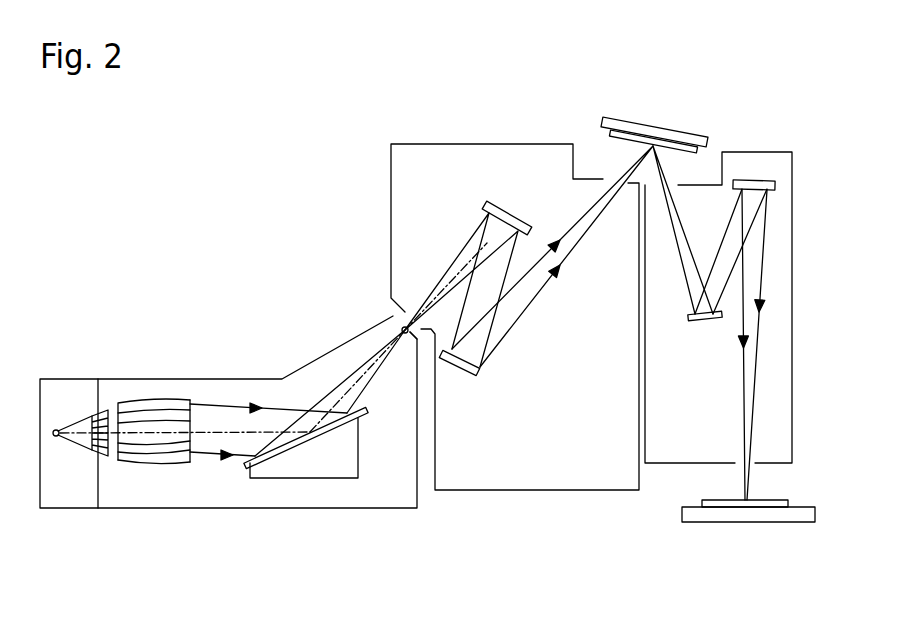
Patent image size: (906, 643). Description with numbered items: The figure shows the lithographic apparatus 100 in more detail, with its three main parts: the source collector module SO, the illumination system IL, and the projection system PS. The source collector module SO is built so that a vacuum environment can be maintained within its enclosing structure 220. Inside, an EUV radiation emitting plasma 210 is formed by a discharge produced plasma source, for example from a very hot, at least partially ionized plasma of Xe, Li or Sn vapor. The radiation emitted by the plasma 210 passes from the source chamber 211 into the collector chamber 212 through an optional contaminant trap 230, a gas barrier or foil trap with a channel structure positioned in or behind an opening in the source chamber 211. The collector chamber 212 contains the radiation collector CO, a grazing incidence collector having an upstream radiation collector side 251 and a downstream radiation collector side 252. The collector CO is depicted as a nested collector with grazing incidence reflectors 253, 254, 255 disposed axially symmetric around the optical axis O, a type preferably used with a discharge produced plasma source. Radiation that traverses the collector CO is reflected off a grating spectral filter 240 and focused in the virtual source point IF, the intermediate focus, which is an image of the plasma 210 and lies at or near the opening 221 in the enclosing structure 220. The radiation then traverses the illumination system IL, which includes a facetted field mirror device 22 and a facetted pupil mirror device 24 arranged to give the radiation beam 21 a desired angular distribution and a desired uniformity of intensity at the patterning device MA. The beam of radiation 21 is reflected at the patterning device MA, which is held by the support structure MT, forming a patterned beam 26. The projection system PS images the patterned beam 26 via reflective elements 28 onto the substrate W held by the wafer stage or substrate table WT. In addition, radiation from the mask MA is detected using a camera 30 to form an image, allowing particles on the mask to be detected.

The apparatus 100 is at (163, 156).
The source collector module SO is at (214, 248).
The EUV radiation emitting plasma 210 is at (56, 438).
The source chamber 211 is at (77, 396).
The collector chamber 212 is at (293, 497).
The enclosing structure 220 is at (313, 356).
The opening 221 is at (398, 323).
The contaminant trap 230 is at (110, 447).
The radiation collector CO is at (165, 405).
The upstream radiation collector side 251 is at (110, 447).
The downstream radiation collector side 252 is at (192, 403).
The grazing incidence reflector 253 is at (172, 463).
The grazing incidence reflector 254 is at (153, 452).
The grazing incidence reflector 255 is at (143, 443).
The grating spectral filter 240 is at (305, 437).
The virtual source point IF is at (405, 337).
The illumination system IL is at (409, 118).
The optical axis O is at (448, 280).
The facetted field mirror device 22 is at (508, 217).
The facetted pupil mirror device 24 is at (465, 367).
The radiation beam 21 is at (519, 296).
The patterning device MA is at (610, 134).
The support structure MT is at (683, 137).
The projection system PS is at (656, 489).
The patterned beam 26 is at (683, 244).
The reflective elements 28 is at (699, 318).
The camera 30 is at (754, 182).
The substrate W is at (762, 505).
The substrate table WT is at (718, 511).